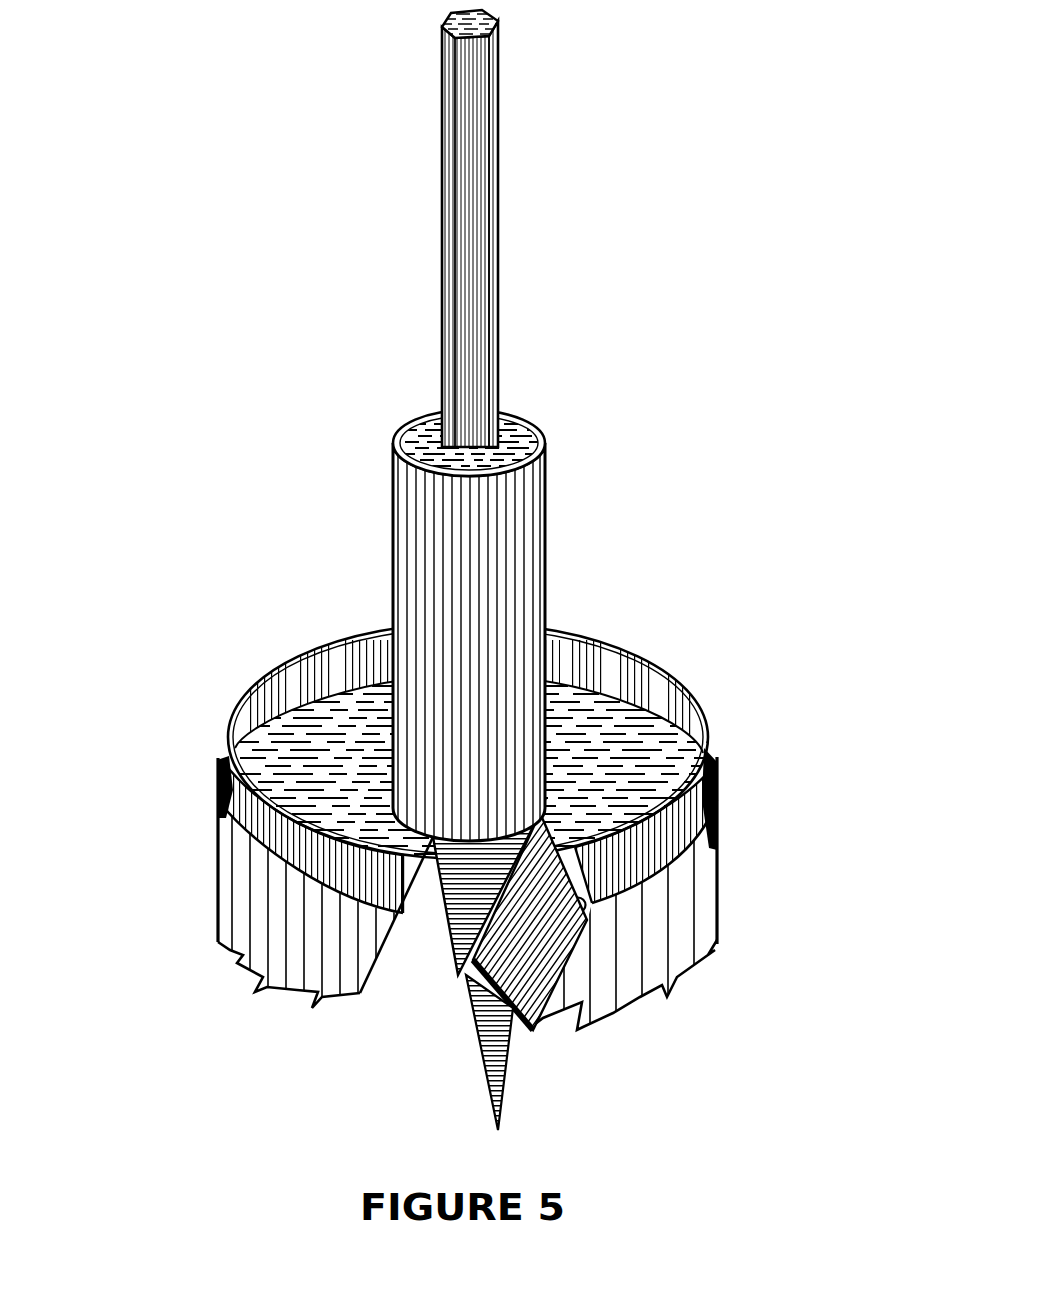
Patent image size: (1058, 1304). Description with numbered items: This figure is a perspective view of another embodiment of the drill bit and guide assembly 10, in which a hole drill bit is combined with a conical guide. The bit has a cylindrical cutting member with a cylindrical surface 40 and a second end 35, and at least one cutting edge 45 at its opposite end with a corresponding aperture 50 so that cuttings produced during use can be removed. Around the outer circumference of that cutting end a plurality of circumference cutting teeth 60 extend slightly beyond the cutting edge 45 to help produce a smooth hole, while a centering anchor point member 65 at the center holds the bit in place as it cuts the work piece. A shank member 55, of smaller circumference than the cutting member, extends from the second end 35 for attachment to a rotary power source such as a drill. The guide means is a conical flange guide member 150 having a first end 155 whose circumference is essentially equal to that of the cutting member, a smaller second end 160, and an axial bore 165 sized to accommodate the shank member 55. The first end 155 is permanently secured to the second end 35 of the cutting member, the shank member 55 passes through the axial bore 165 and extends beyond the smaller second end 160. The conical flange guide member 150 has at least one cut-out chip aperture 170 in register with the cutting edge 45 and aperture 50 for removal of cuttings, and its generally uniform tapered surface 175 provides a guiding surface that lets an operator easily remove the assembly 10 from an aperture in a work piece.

The drill bit and guide assembly 10 is at (708, 355).
The second end 35 is at (352, 792).
The cylindrical surface 40 is at (680, 933).
The cutting edge 45 is at (478, 1023).
The aperture 50 is at (409, 922).
The shank member 55 is at (490, 185).
The circumference cutting teeth 60 is at (677, 990).
The centering anchor point member 65 is at (490, 1090).
The conical flange guide member 150 is at (732, 728).
The first end 155 is at (592, 905).
The smaller second end 160 is at (713, 775).
The axial bore 165 is at (575, 720).
The chip aperture 170 is at (393, 930).
The tapered surface 175 is at (697, 822).